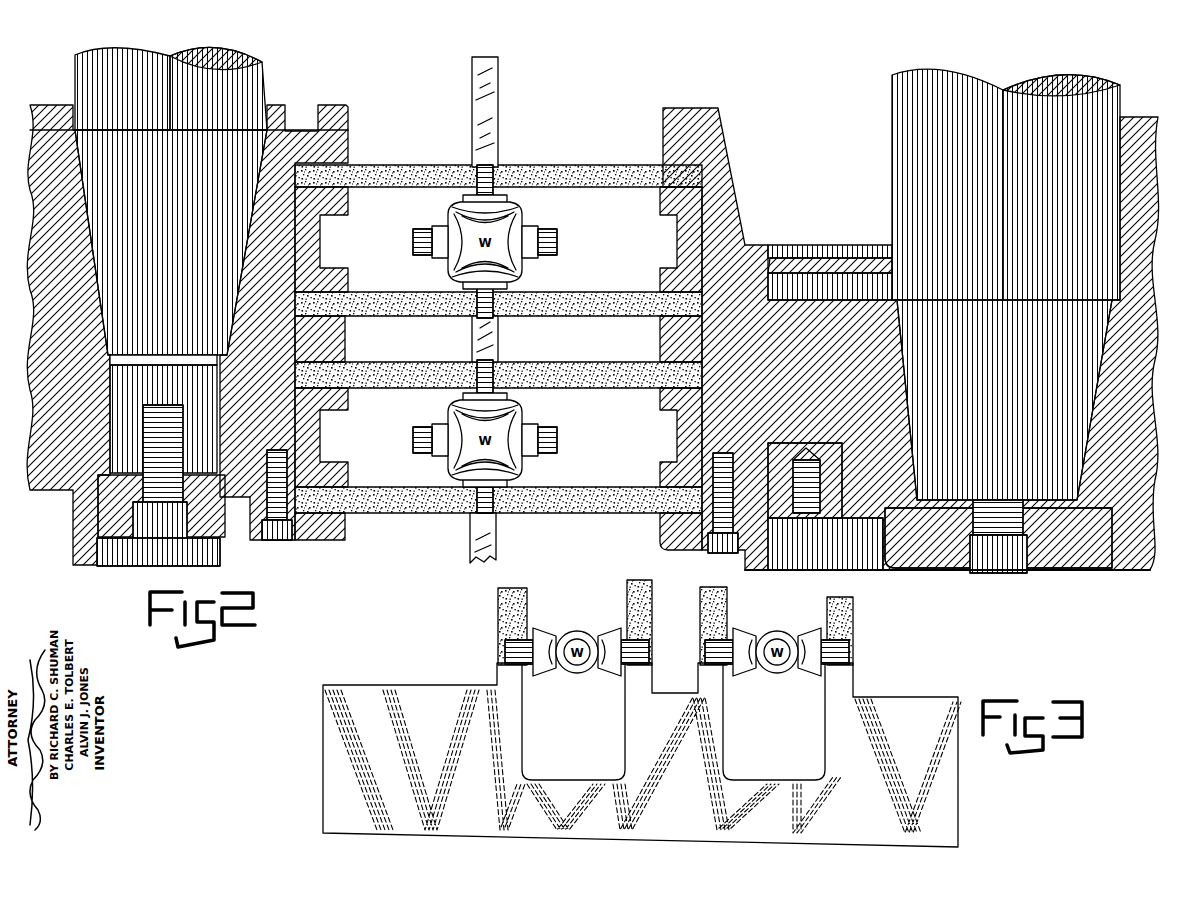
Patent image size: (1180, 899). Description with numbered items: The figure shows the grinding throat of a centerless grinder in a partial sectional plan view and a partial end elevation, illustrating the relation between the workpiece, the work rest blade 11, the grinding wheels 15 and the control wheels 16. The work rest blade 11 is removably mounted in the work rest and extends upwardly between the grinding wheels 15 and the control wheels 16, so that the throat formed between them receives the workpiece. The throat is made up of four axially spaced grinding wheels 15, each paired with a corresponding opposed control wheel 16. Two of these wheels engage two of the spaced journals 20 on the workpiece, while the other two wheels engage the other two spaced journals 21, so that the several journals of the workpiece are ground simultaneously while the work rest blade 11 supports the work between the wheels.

In FIG. 2, the work rest blade 11 is at (493, 97).
In FIG. 3, the work rest blade 11 is at (890, 697).
In FIG. 2, the grinding wheels 15 is at (623, 189).
In FIG. 2, the control wheels 16 is at (385, 189).
In FIG. 3, the control wheels 16 is at (627, 603).
In FIG. 2, the spaced journals 20 is at (493, 172).
In FIG. 2, the spaced journals 21 is at (424, 229).